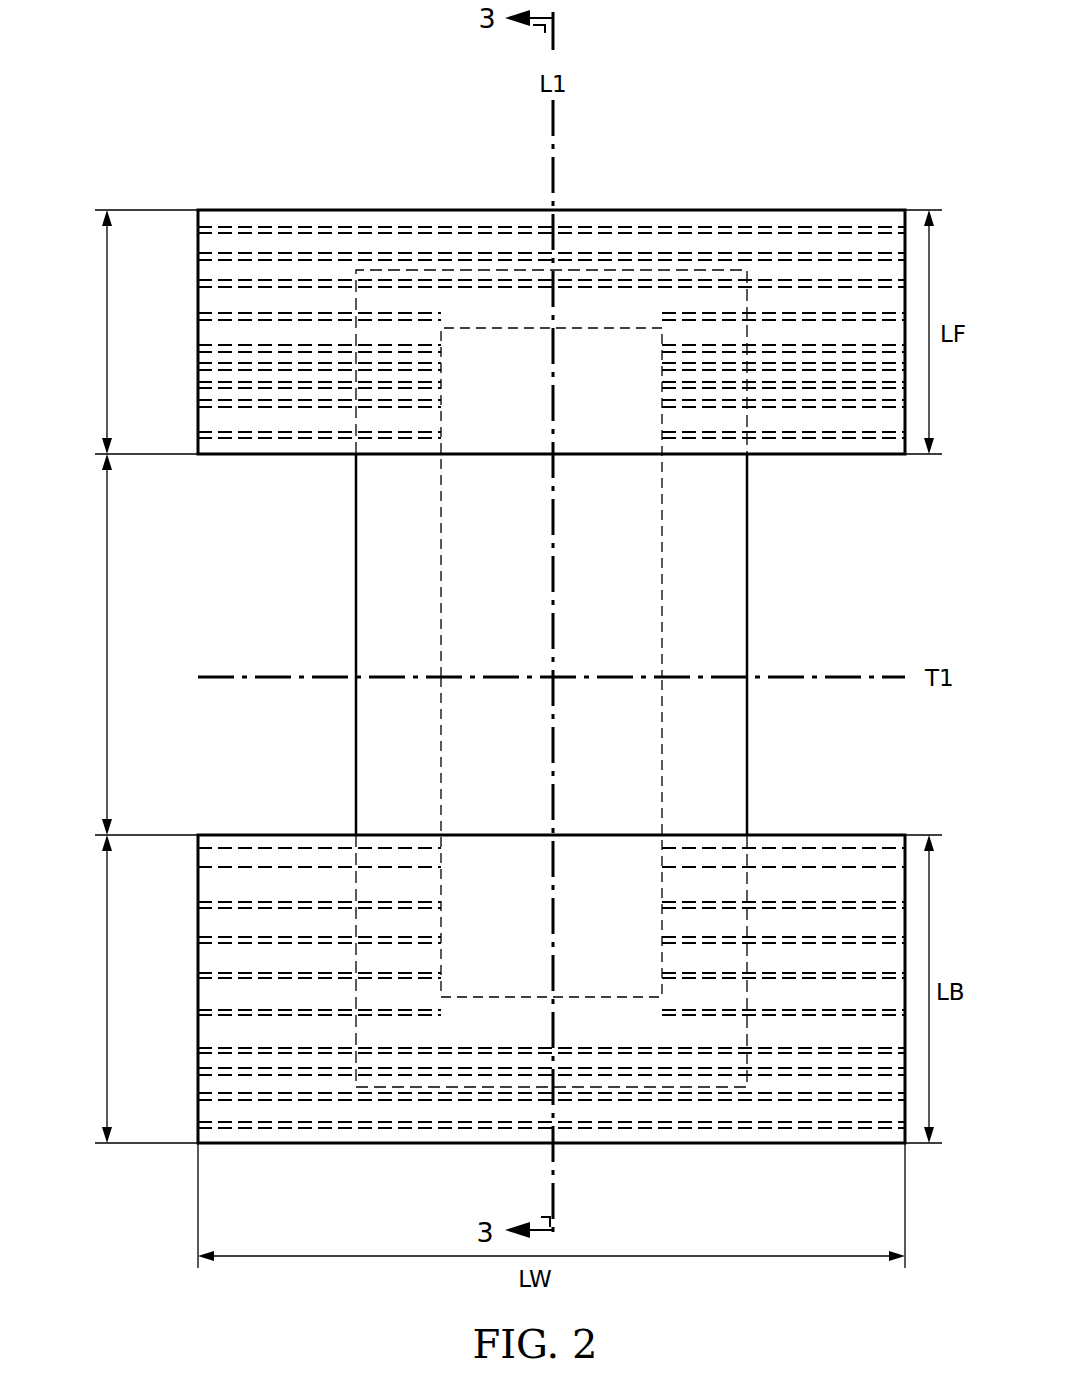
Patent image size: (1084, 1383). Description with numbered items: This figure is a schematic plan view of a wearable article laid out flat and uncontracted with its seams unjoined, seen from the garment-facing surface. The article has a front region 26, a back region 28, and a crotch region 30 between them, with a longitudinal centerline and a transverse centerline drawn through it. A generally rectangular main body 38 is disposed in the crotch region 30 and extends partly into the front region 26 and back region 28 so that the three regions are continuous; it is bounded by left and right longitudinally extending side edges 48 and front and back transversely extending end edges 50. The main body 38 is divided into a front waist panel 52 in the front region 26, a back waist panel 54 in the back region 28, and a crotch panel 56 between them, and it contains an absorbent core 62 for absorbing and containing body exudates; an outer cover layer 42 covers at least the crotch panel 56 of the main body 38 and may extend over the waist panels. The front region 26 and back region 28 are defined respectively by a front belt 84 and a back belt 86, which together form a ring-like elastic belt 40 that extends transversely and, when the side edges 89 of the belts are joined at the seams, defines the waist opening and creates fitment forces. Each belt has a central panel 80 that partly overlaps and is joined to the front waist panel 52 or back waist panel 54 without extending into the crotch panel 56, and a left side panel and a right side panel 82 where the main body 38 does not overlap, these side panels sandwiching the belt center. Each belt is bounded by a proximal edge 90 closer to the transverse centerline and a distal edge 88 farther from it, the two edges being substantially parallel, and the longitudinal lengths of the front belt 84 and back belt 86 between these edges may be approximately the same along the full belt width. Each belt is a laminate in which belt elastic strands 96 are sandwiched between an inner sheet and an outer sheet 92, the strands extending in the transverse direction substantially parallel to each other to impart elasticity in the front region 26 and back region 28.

The front region 26 is at (107, 330).
The back region 28 is at (107, 1010).
The crotch region 30 is at (107, 641).
The main body 38 is at (748, 630).
The elastic belt 40 is at (697, 146).
The outer cover layer 42 is at (740, 736).
The side edges 48 is at (355, 568).
The end edges 50 is at (440, 268).
The front waist panel 52 is at (478, 409).
The back waist panel 54 is at (478, 934).
The crotch panel 56 is at (356, 646).
The absorbent core 62 is at (440, 592).
The central panel 80 is at (515, 250).
The side panel 82 is at (265, 412).
The front belt 84 is at (838, 211).
The back belt 86 is at (240, 1143).
The distal edge 88 is at (590, 211).
The side edges 89 is at (200, 300).
The proximal edge 90 is at (326, 455).
The outer sheet 92 is at (238, 222).
The belt elastic strands 96 is at (215, 262).